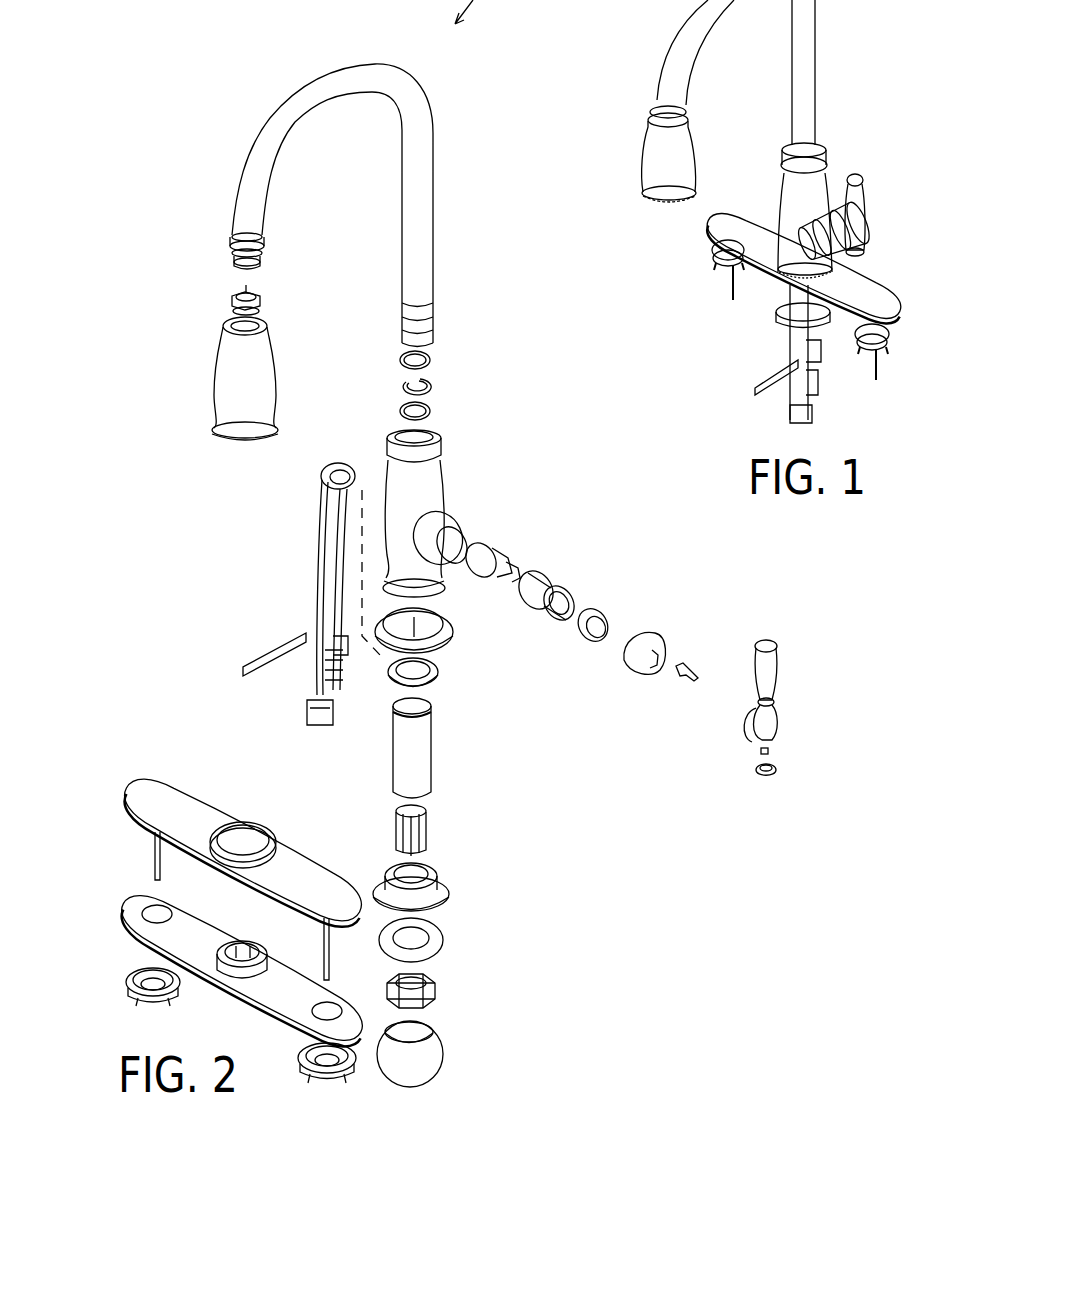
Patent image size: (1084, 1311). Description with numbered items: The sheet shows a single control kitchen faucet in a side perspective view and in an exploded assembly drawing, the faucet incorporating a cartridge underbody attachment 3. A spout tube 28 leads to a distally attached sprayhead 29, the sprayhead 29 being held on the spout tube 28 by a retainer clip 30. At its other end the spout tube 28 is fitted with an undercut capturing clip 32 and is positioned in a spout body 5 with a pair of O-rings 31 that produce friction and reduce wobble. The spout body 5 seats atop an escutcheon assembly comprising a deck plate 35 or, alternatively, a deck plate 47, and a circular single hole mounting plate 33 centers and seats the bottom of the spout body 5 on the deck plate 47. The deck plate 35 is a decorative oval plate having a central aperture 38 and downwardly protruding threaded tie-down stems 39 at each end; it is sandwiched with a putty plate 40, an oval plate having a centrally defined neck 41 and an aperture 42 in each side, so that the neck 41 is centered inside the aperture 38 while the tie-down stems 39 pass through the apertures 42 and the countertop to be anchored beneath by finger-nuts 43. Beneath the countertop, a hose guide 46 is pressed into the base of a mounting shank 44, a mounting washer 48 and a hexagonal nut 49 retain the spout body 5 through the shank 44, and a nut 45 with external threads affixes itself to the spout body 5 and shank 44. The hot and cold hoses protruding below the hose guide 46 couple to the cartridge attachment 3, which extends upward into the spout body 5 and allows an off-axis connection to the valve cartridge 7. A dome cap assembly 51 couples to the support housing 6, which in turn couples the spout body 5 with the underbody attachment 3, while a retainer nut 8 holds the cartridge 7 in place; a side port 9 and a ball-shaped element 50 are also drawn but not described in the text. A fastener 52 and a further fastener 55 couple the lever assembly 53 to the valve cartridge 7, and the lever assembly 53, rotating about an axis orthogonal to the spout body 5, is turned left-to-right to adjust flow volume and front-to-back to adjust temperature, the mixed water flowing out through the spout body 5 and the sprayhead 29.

In FIG. 1, the cartridge attachment 3 is at (794, 355).
In FIG. 2, the cartridge attachment 3 is at (315, 532).
In FIG. 1, the spout body 5 is at (781, 192).
In FIG. 2, the spout body 5 is at (445, 482).
In FIG. 1, the support housing 6 is at (838, 210).
In FIG. 2, the support housing 6 is at (552, 578).
In FIG. 2, the valve cartridge 7 is at (503, 553).
In FIG. 2, the retainer nut 8 is at (606, 612).
In FIG. 2, the side port 9 is at (462, 525).
In FIG. 1, the spout tube 28 is at (818, 92).
In FIG. 2, the spout tube 28 is at (436, 196).
In FIG. 1, the sprayhead 29 is at (643, 152).
In FIG. 2, the sprayhead 29 is at (213, 378).
In FIG. 2, the retainer clip 30 is at (232, 300).
In FIG. 2, the O-rings 31 is at (433, 357).
In FIG. 2, the undercut capturing clip 32 is at (432, 384).
In FIG. 2, the single hole mounting plate 33 is at (452, 641).
In FIG. 1, the deck plate 35 is at (804, 269).
In FIG. 2, the deck plate 35 is at (128, 786).
In FIG. 2, the central aperture 38 is at (250, 830).
In FIG. 2, the tie-down stems 39 is at (148, 838).
In FIG. 2, the putty plate 40 is at (283, 975).
In FIG. 2, the neck 41 is at (248, 950).
In FIG. 2, the apertures 42 is at (160, 912).
In FIG. 1, the finger-nuts 43 is at (711, 263).
In FIG. 2, the finger-nuts 43 is at (128, 975).
In FIG. 2, the mounting shank 44 is at (436, 750).
In FIG. 2, the nut 45 is at (440, 688).
In FIG. 2, the hose guide 46 is at (430, 820).
In FIG. 2, the deck plate 47 is at (452, 888).
In FIG. 2, the mounting washer 48 is at (446, 942).
In FIG. 2, the hexagonal nut 49 is at (437, 993).
In FIG. 2, the weight ball 50 is at (448, 1060).
In FIG. 2, the dome cap assembly 51 is at (660, 633).
In FIG. 2, the fastener 52 is at (695, 667).
In FIG. 1, the lever assembly 53 is at (866, 192).
In FIG. 2, the lever assembly 53 is at (781, 673).
In FIG. 2, the fastener 55 is at (778, 750).